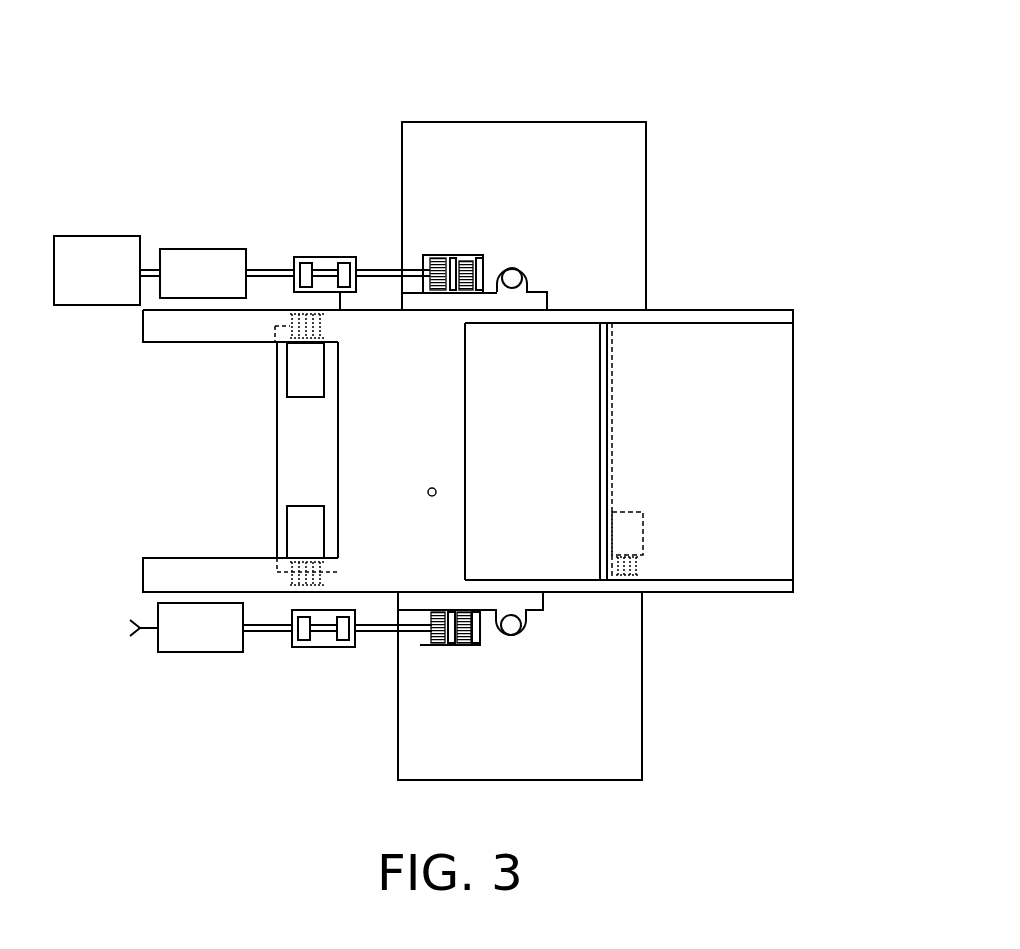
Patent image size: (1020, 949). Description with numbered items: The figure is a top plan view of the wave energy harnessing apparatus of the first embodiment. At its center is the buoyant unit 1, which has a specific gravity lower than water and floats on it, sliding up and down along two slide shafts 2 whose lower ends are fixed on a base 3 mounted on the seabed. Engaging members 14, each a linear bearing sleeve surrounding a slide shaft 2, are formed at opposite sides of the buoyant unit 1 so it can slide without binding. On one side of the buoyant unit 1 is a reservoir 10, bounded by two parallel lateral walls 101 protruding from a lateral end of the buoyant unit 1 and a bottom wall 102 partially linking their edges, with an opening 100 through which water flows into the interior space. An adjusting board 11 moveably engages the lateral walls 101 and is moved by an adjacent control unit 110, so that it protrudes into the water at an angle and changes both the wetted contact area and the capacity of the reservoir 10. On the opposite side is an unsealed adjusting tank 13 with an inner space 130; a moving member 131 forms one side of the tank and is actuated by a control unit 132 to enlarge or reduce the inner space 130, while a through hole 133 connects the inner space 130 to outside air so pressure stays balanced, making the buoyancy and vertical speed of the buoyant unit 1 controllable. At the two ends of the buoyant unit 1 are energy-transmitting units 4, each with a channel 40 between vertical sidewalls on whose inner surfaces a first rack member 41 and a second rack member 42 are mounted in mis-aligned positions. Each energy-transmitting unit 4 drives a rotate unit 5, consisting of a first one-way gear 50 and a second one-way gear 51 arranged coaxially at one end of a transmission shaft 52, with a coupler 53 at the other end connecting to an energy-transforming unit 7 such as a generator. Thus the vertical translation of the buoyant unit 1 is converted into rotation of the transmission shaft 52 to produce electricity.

The buoyant unit 1 is at (662, 296).
The slide shaft 2 is at (522, 632).
The base 3 is at (556, 778).
The energy-transmitting unit 4 is at (486, 266).
The rotate unit 5 is at (230, 56).
The energy-transforming unit 7 is at (110, 248).
The reservoir 10 is at (712, 344).
The adjusting board 11 is at (777, 557).
The adjusting tank 13 is at (112, 445).
The engaging member 14 is at (525, 268).
The channel 40 is at (478, 254).
The first rack member 41 is at (474, 254).
The second rack member 42 is at (500, 276).
The first one-way gear 50 is at (462, 256).
The second one-way gear 51 is at (420, 266).
The transmission shaft 52 is at (274, 268).
The coupler 53 is at (190, 250).
The opening 100 is at (795, 315).
The lateral wall 101 is at (702, 322).
The bottom wall 102 is at (562, 347).
The control unit 110 is at (640, 532).
The inner space 130 is at (404, 431).
The moving member 131 is at (275, 538).
The control unit 132 is at (302, 523).
The through hole 133 is at (428, 491).